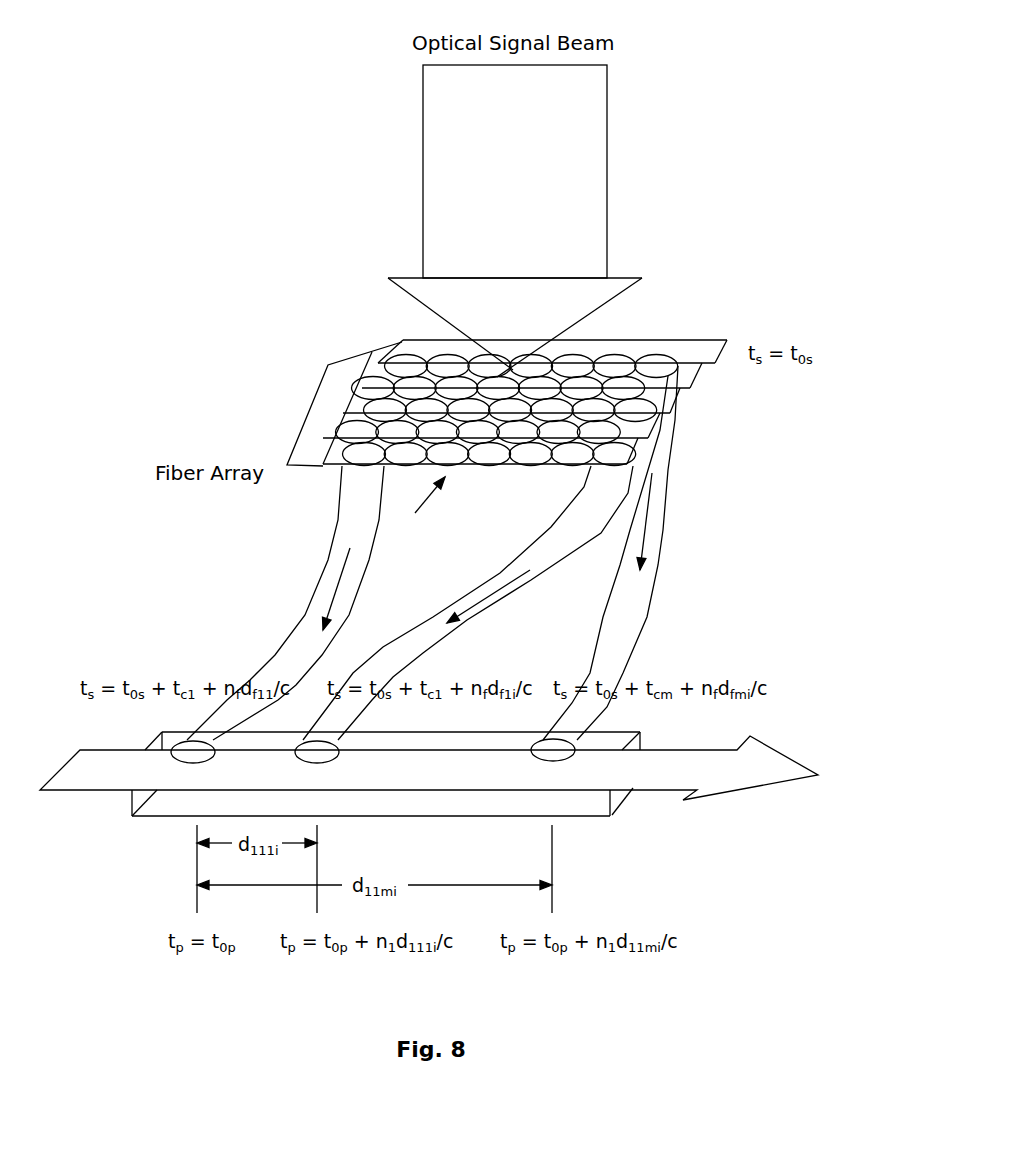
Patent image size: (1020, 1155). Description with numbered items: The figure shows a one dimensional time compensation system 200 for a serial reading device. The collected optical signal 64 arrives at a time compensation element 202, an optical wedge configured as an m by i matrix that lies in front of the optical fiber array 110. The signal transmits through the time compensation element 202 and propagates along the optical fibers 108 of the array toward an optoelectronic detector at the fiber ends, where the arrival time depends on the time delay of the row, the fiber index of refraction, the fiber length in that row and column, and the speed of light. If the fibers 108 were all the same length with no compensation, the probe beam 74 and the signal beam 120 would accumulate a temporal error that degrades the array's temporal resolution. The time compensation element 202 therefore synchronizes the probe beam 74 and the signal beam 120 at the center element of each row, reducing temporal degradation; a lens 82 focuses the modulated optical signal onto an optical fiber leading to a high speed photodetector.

The one dimensional time compensation system 200 is at (303, 128).
The collected optical signal 64 is at (515, 221).
The time compensation element 202 is at (347, 360).
The optical fiber 108 is at (353, 513).
The signal beam 120 is at (687, 497).
The optical fiber array 110 is at (418, 510).
The probe beam 74 is at (68, 783).
The lens 82 is at (595, 808).